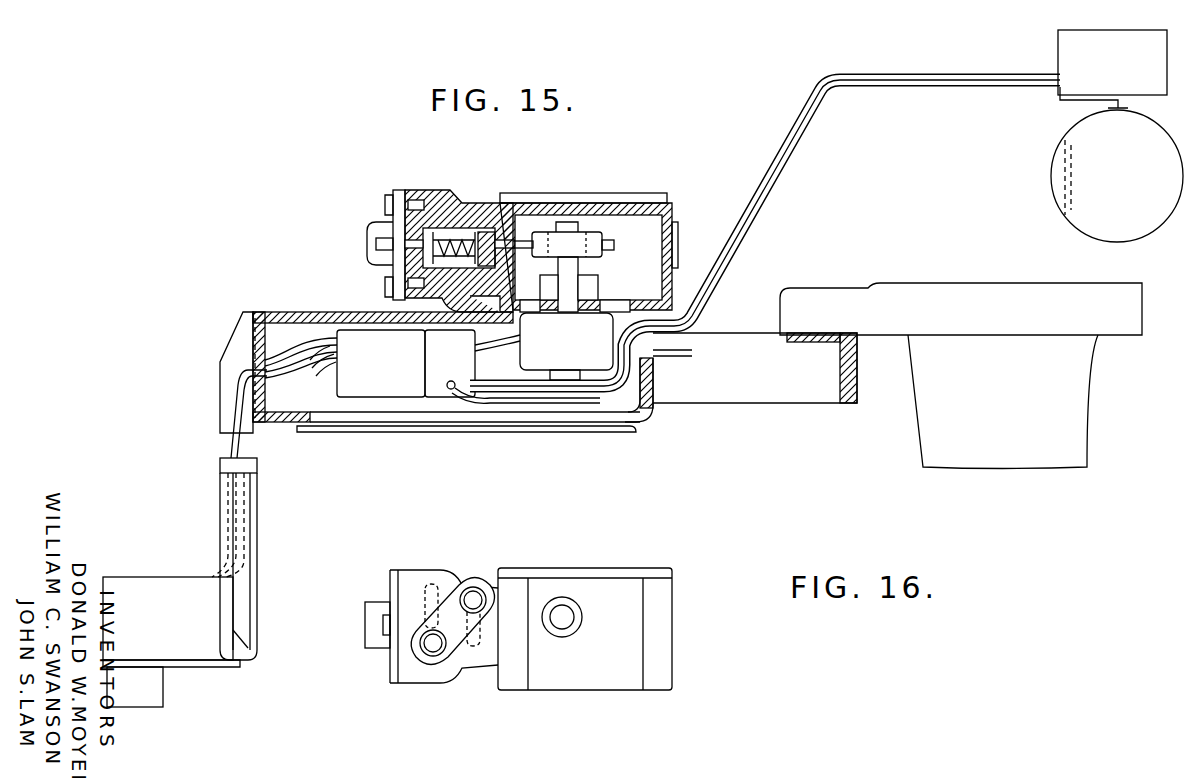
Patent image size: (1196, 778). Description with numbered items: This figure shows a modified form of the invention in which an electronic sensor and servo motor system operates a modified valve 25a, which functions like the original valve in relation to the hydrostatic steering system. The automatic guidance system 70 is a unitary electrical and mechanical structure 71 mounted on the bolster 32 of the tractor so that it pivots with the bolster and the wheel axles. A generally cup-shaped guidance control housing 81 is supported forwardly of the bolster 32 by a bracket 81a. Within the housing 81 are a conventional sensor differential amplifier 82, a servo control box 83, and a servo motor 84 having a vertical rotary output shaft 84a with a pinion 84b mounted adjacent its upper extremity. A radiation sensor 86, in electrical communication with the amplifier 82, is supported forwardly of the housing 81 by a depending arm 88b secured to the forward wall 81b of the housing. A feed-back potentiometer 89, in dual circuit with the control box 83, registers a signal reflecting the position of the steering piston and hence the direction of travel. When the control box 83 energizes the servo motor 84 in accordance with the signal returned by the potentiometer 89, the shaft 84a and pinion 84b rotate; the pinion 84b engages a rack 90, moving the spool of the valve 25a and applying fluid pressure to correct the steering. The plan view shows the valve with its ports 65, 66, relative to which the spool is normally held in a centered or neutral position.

In FIG. 15, the modified valve 25a is at (447, 212).
In FIG. 15, the bolster 32 is at (998, 398).
In FIG. 16, the port 65 is at (428, 657).
In FIG. 16, the port 66 is at (476, 590).
In FIG. 15, the automatic guidance system 70 is at (774, 118).
In FIG. 15, the unitary electrical and mechanical structure 71 is at (299, 275).
In FIG. 15, the guidance control housing 81 is at (272, 312).
In FIG. 15, the bracket 81a is at (787, 403).
In FIG. 15, the forward wall 81b is at (260, 335).
In FIG. 15, the sensor differential amplifier 82 is at (384, 377).
In FIG. 15, the servo control box 83 is at (460, 367).
In FIG. 15, the servo motor 84 is at (575, 361).
In FIG. 15, the vertical rotary output shaft 84a is at (568, 297).
In FIG. 15, the pinion 84b is at (592, 262).
In FIG. 15, the radiation sensor 86 is at (176, 629).
In FIG. 15, the depending arm 88b is at (220, 365).
In FIG. 15, the feed-back potentiometer 89 is at (1130, 81).
In FIG. 15, the rack 90 is at (583, 237).